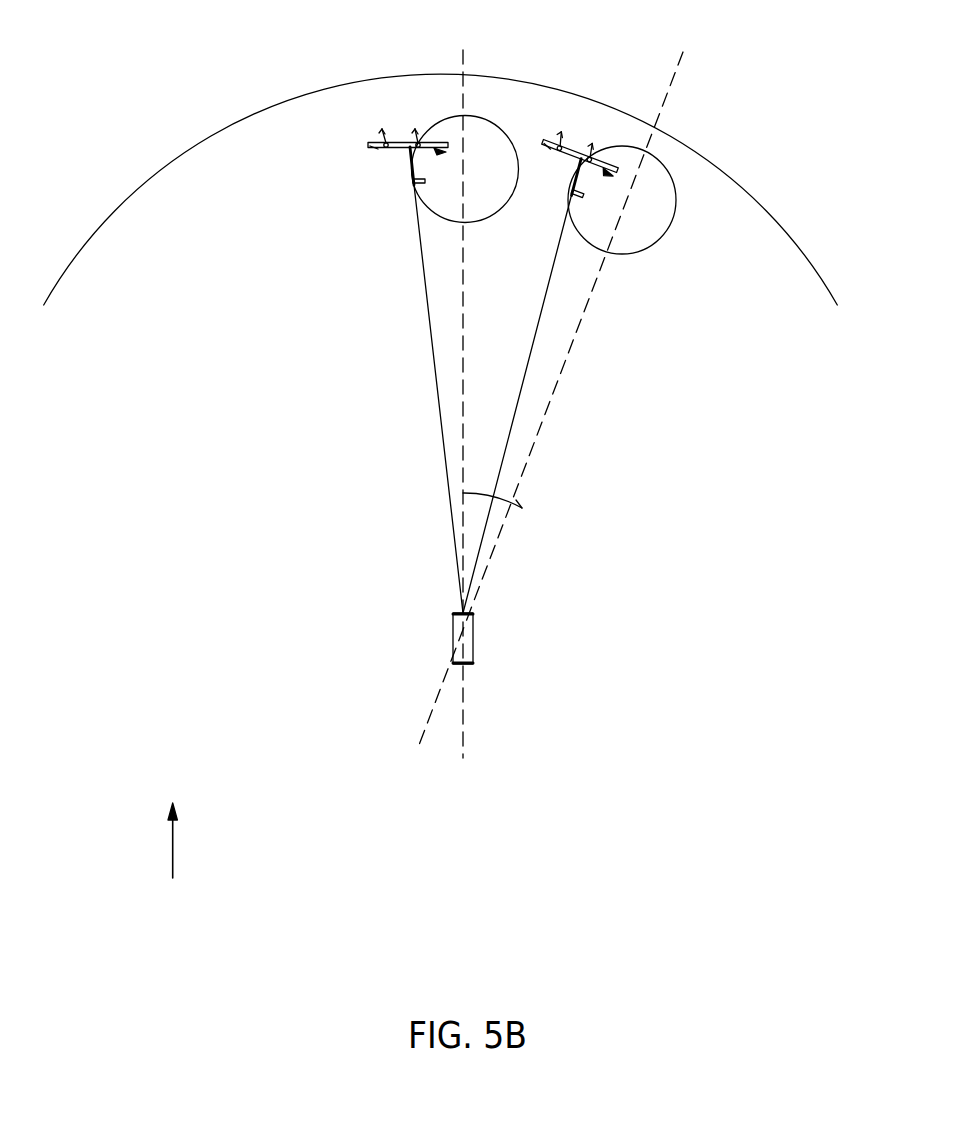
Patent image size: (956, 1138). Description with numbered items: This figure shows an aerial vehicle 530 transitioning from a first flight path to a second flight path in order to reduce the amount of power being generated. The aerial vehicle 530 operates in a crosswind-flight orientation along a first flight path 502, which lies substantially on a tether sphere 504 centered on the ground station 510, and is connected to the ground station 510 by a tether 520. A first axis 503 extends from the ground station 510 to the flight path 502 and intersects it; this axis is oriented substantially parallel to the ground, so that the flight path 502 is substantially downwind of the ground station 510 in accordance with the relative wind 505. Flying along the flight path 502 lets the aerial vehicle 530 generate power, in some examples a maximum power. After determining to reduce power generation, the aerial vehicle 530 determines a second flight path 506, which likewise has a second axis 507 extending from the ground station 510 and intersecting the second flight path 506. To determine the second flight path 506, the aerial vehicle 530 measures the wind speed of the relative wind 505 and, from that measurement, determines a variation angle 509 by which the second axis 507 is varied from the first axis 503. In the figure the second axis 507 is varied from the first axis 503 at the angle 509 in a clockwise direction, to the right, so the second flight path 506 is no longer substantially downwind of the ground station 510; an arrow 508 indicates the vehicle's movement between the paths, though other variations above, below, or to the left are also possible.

The flight path 502 is at (498, 212).
The axis 503 is at (465, 362).
The tether sphere 504 is at (647, 121).
The relative wind 505 is at (172, 840).
The second flight path 506 is at (664, 235).
The second axis 507 is at (551, 415).
The aerial vehicle movement indicator 508 is at (503, 106).
The variation angle 509 is at (514, 494).
The ground station 510 is at (452, 648).
The tether 520 is at (428, 334).
The aerial vehicle 530 is at (368, 146).